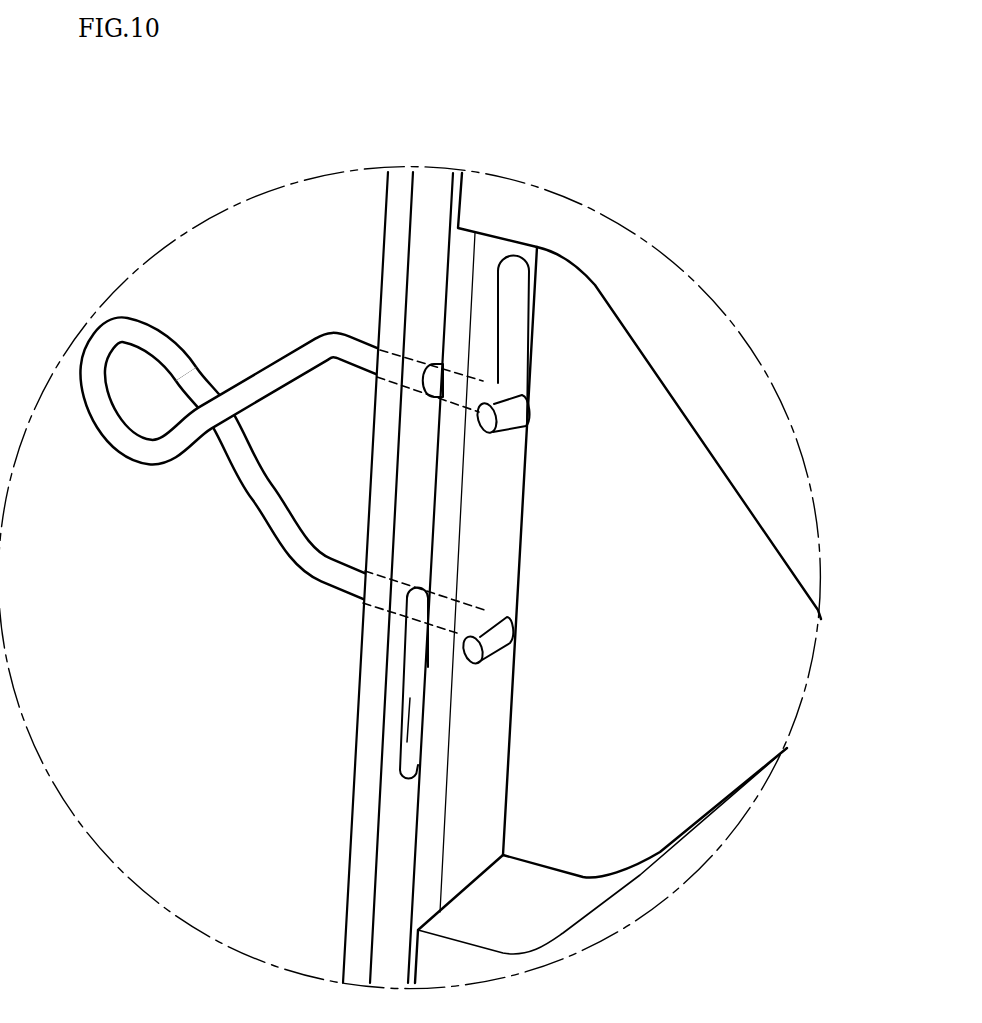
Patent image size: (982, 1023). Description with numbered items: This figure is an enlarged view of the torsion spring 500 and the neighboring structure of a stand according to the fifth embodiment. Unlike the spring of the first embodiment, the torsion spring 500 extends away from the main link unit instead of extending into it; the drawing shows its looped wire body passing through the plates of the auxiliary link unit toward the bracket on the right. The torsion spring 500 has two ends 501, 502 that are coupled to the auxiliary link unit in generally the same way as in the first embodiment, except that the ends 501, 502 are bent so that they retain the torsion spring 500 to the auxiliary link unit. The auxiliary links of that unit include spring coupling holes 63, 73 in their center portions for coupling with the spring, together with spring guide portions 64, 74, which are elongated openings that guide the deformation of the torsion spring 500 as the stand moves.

The spring coupling hole 63 is at (437, 363).
The spring guide portion 64 is at (410, 697).
The spring coupling hole 73 is at (497, 610).
The spring guide portion 74 is at (517, 277).
The torsion spring 500 is at (130, 330).
The end of the torsion spring 501 is at (528, 427).
The end of the torsion spring 502 is at (493, 643).